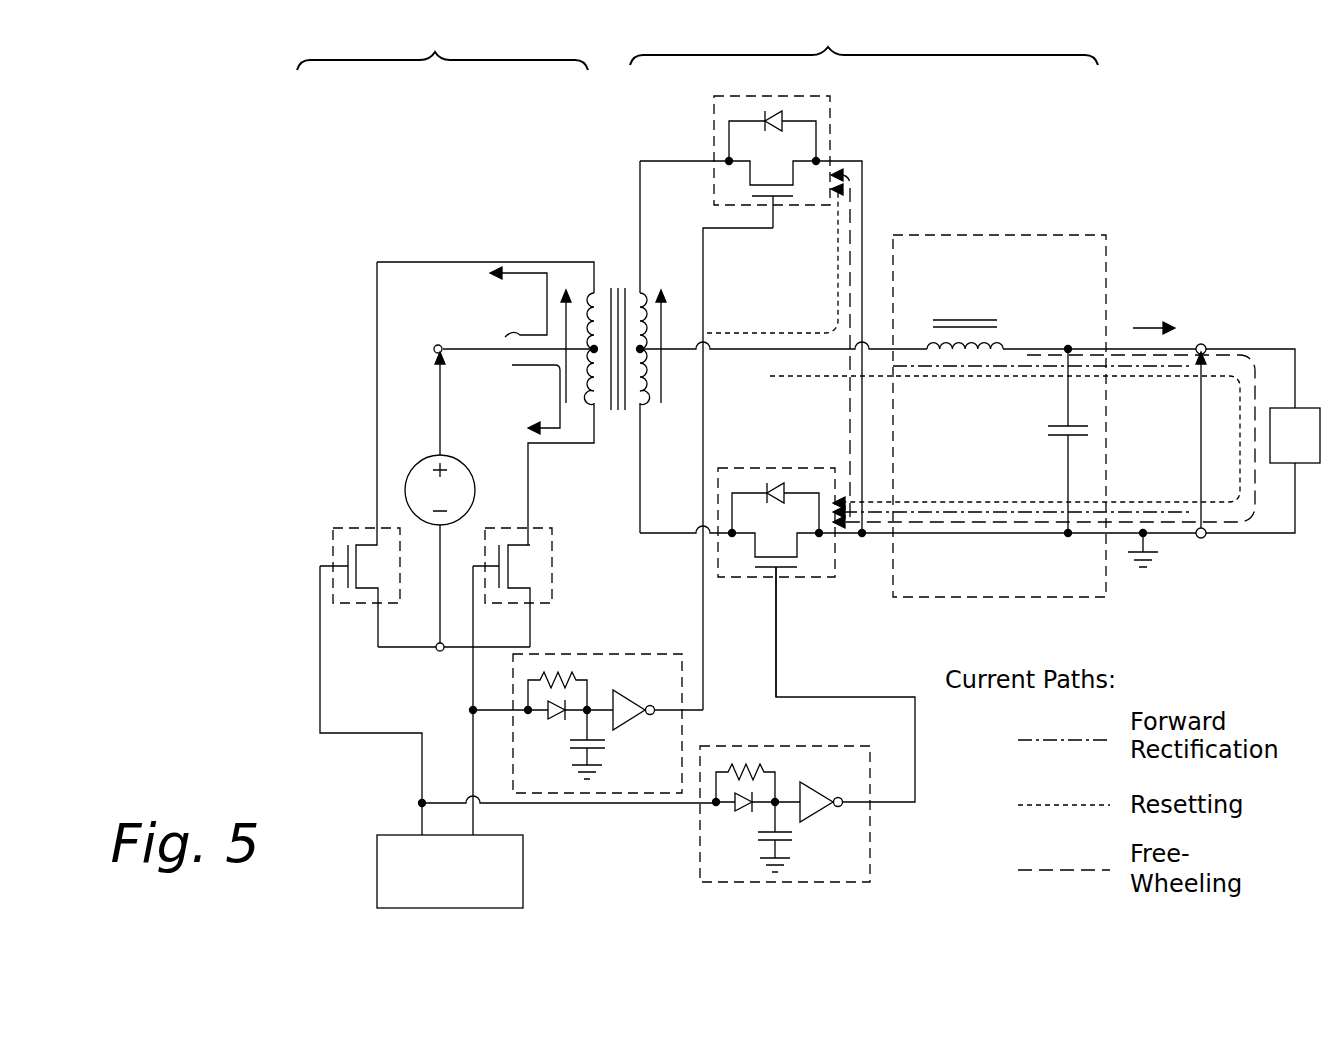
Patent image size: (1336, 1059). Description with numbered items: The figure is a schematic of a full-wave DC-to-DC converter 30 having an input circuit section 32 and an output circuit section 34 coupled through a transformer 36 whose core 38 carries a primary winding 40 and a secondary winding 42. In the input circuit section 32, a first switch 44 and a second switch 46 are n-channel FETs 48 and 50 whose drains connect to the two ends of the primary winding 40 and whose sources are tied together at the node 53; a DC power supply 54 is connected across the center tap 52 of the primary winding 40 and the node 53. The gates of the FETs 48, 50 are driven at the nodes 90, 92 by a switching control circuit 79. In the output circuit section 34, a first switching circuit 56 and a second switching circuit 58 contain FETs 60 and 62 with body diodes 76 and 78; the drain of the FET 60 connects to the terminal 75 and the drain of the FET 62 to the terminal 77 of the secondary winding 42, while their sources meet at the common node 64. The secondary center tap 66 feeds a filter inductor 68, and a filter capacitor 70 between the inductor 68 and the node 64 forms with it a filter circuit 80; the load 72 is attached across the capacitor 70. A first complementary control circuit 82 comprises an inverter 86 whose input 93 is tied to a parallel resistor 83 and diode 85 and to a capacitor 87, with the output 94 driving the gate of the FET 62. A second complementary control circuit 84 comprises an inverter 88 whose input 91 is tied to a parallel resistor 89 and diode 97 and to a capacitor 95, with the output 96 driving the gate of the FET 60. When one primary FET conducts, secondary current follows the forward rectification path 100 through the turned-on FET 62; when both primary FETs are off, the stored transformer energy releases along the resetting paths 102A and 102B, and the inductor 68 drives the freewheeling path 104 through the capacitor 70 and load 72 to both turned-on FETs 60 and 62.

The full-wave DC-to-DC converter 30 is at (1197, 134).
The input circuit section 32 is at (442, 42).
The output circuit section 34 is at (864, 39).
The transformer 36 is at (534, 353).
The core 38 is at (618, 410).
The primary winding 40 is at (574, 403).
The secondary winding 42 is at (643, 403).
The first switch 44 is at (367, 454).
The second switch 46 is at (527, 565).
The first FET 48 is at (375, 551).
The second FET 50 is at (532, 551).
The center tap of the primary winding 52 is at (467, 346).
The common connection node 53 is at (425, 650).
The DC power supply 54 is at (415, 472).
The first switching circuit 56 is at (744, 149).
The second switching circuit 58 is at (775, 557).
The FET of first switching circuit 60 is at (705, 193).
The FET of second switching circuit 62 is at (752, 570).
The common node 64 is at (865, 538).
The center tap node of the secondary winding 66 is at (710, 352).
The filter inductor 68 is at (978, 318).
The filter capacitor 70 is at (1061, 428).
The load 72 is at (1194, 426).
The terminal of the secondary winding 75 is at (640, 158).
The body diode 76 is at (768, 110).
The other terminal of the secondary winding 77 is at (656, 540).
The body diode 78 is at (763, 485).
The switching control circuit 79 is at (546, 852).
The filter circuit 80 is at (1018, 383).
The first complementary control circuit 82 is at (785, 791).
The resistor 83 is at (758, 764).
The second complementary control circuit 84 is at (608, 701).
The diode 85 is at (746, 815).
The inverter 86 is at (810, 810).
The capacitor 87 is at (777, 846).
The inverter 88 is at (622, 724).
The resistor 89 is at (569, 674).
The node 90 is at (374, 735).
The input of the inverter 91 is at (623, 695).
The node 92 is at (470, 698).
The input of the inverter 93 is at (802, 791).
The output of the inverter 94 is at (773, 663).
The capacitor 95 is at (599, 764).
The output of the inverter 96 is at (703, 638).
The diode 97 is at (560, 715).
The current path 100 is at (777, 370).
The current path 102A is at (964, 502).
The current path 102B is at (773, 332).
The current path 104 is at (850, 234).